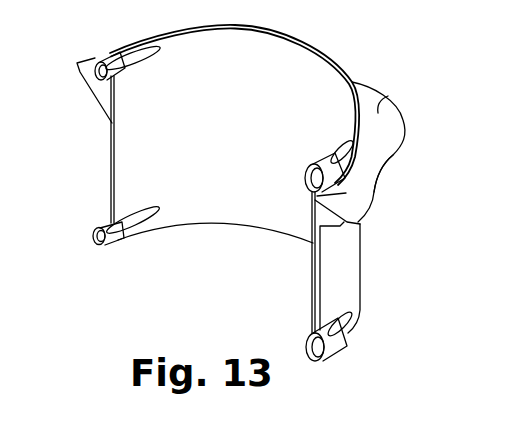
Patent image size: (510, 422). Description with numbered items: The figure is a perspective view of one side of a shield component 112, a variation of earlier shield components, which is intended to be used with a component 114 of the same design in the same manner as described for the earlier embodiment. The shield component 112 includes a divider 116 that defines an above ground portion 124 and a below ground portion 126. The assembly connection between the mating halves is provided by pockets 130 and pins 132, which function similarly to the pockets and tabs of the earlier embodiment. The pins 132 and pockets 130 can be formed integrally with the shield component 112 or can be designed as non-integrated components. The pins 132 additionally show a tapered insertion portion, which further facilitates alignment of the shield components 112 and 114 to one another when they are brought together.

The shield component 112 is at (398, 176).
The component 114 is at (428, 119).
The divider 116 is at (378, 112).
The above ground portion 124 is at (331, 51).
The below ground portion 126 is at (376, 269).
The pockets 130 is at (346, 193).
The pins 132 is at (102, 60).